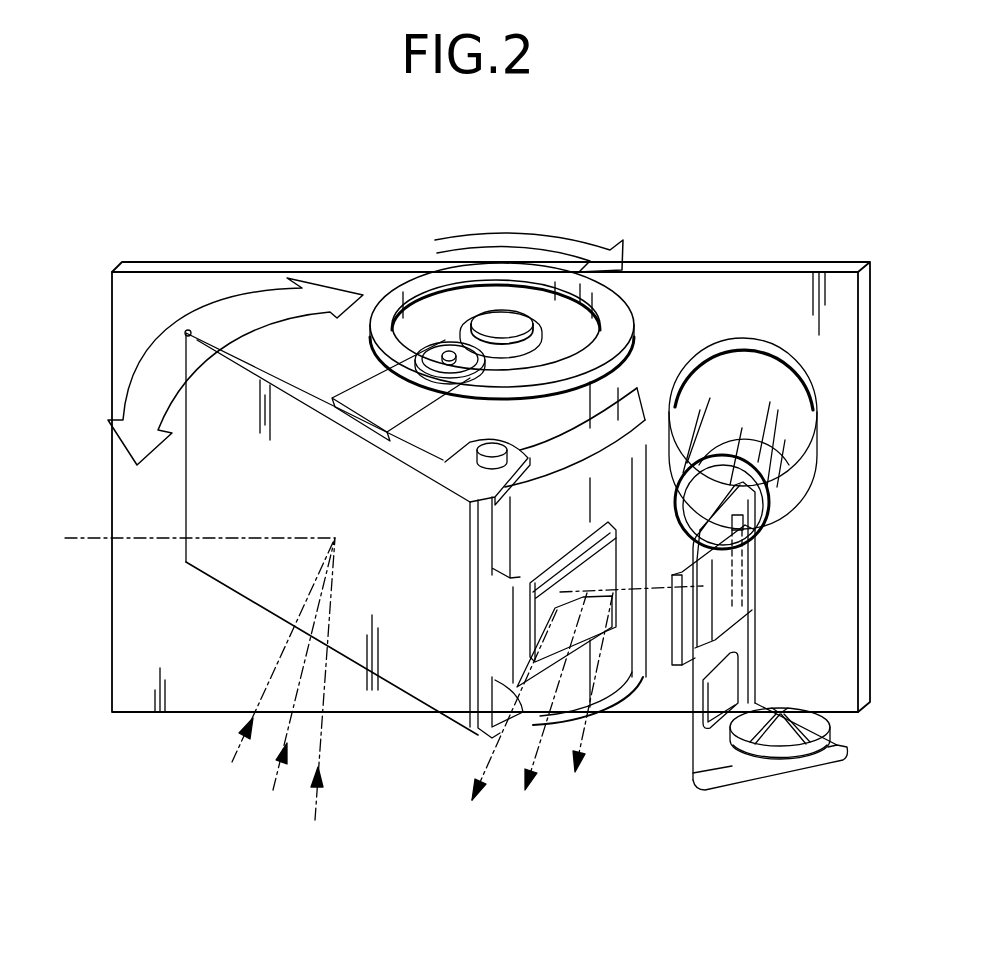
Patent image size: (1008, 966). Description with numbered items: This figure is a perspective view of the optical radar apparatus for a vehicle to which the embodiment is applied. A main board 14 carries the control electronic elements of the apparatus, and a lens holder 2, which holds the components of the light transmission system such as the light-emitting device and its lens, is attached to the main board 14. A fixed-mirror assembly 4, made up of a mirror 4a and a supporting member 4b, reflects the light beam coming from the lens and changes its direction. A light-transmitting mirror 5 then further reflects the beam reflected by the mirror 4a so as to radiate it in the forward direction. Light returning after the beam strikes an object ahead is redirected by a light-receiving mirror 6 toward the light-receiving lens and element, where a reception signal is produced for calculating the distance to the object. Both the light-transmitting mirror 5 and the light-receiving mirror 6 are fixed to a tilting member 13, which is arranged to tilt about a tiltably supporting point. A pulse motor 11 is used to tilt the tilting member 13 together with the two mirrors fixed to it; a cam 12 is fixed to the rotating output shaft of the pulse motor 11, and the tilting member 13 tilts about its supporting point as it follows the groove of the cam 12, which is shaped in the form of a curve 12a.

The lens holder 2 is at (788, 485).
The fixed-mirror assembly 4 is at (738, 635).
The mirror 4a is at (670, 647).
The supporting member 4b is at (723, 765).
The light-transmitting mirror 5 is at (600, 613).
The light-receiving mirror 6 is at (397, 677).
The pulse motor 11 is at (595, 541).
The cam 12 is at (615, 296).
The curve 12a is at (425, 305).
The tilting member 13 is at (490, 613).
The main board 14 is at (778, 292).